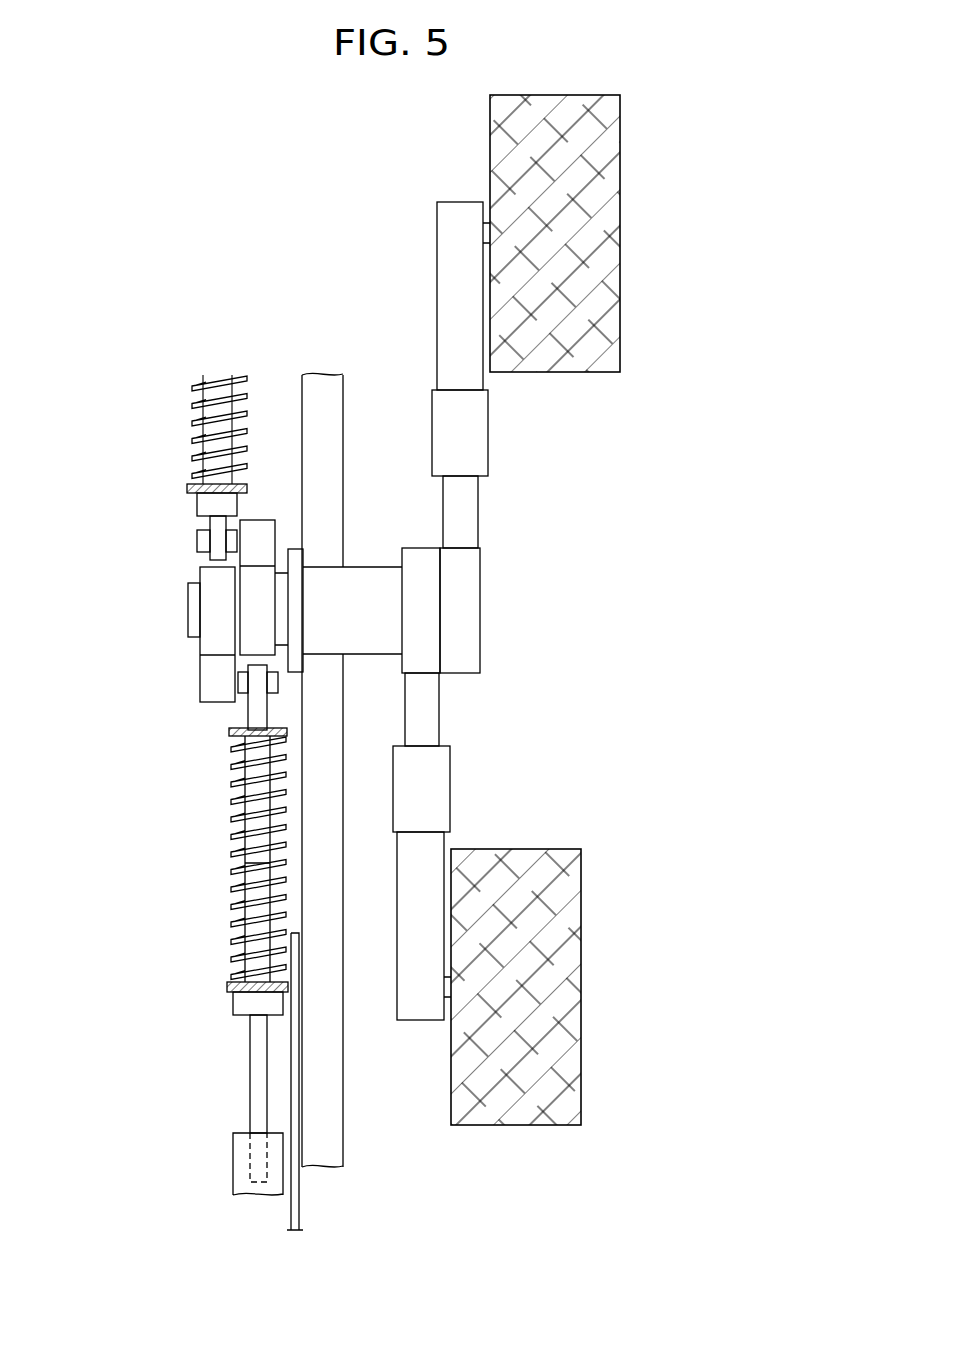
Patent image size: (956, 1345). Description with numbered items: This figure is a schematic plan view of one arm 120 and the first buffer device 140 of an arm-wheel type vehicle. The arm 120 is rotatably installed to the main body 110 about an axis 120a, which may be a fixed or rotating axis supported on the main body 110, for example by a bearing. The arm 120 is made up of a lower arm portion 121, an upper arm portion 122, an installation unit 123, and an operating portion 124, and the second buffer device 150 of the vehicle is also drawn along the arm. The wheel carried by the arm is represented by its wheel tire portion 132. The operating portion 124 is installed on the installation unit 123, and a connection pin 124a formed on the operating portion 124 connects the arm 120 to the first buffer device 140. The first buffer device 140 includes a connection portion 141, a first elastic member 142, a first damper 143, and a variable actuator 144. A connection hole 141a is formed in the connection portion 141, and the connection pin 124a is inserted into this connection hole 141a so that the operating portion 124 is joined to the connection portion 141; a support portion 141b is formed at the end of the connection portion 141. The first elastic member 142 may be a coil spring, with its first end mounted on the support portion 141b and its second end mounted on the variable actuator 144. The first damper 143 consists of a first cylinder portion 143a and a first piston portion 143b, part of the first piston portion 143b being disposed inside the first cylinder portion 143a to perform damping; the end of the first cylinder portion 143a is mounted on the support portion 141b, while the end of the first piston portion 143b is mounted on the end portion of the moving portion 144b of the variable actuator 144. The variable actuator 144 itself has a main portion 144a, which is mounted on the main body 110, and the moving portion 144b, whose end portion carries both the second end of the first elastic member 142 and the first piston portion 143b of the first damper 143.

The main body 110 is at (335, 1148).
The arm 120 is at (286, 480).
The axis 120a is at (189, 604).
The lower arm portion 121 is at (399, 983).
The upper arm portion 122 is at (524, 708).
The installation unit 123 is at (206, 648).
The operating portion 124 is at (208, 688).
The connection pin 124a is at (243, 680).
The wheel tire portion 132 is at (612, 983).
The first buffer device 140 is at (221, 784).
The connection portion 141 is at (252, 708).
The connection hole 141a is at (205, 510).
The support portion 141b is at (232, 733).
The first elastic member 142 is at (237, 793).
The first damper 143 is at (180, 859).
The first cylinder portion 143a is at (238, 824).
The first piston portion 143b is at (243, 893).
The variable actuator 144 is at (178, 1088).
The main portion 144a is at (238, 1149).
The moving portion 144b is at (250, 1085).
The second buffer device 150 is at (524, 788).